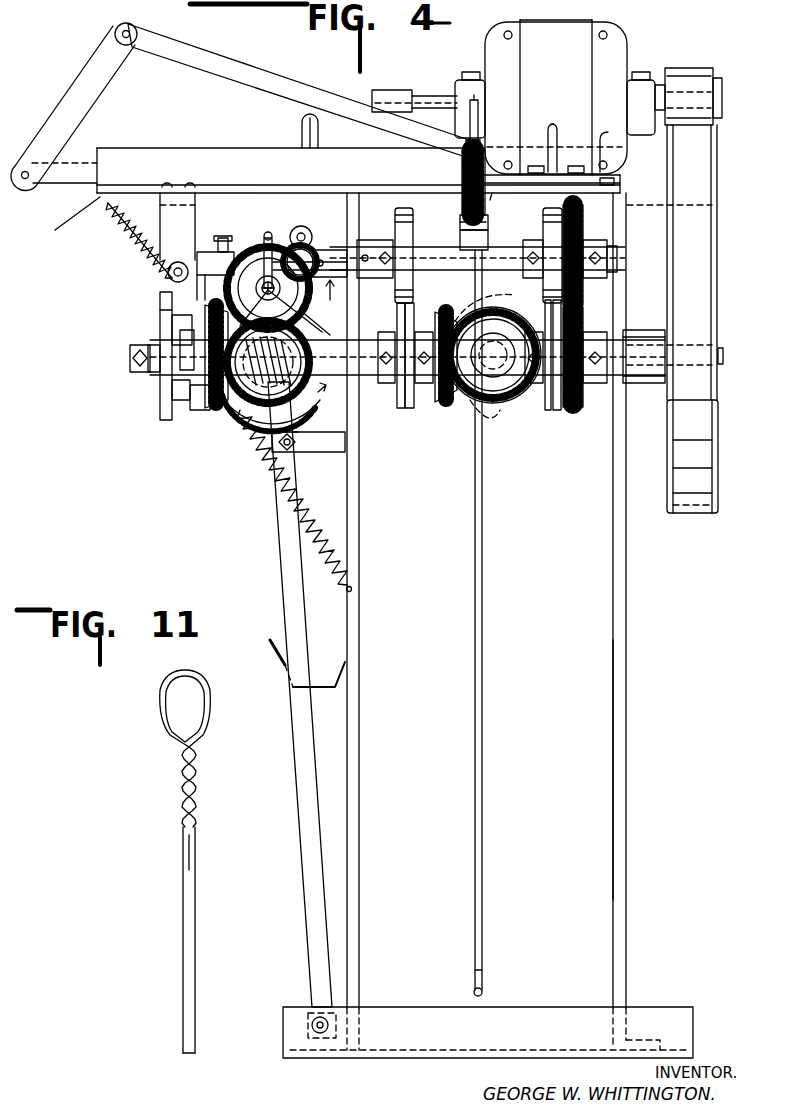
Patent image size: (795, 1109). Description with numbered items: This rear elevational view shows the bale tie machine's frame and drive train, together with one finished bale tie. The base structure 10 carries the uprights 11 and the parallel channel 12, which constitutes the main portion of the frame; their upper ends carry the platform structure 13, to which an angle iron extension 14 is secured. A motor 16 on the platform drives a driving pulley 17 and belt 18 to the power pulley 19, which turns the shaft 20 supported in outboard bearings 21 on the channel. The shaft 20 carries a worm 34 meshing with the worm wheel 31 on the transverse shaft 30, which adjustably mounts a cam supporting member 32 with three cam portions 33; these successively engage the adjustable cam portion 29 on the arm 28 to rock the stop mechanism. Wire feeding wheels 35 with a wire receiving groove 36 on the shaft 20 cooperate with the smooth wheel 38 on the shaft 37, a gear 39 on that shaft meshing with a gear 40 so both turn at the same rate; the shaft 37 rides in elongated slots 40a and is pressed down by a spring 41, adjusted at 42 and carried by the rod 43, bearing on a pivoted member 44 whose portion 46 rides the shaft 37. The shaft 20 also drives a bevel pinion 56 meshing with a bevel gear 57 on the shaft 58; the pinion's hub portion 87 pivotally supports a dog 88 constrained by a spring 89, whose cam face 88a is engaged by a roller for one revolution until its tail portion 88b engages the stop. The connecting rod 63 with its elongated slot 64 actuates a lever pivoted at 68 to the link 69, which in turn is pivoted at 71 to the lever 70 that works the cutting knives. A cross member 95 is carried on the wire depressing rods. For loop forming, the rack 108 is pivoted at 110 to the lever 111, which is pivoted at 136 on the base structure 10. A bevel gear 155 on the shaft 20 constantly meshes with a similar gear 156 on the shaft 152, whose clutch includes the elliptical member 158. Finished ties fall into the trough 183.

The base structure 10 is at (522, 1030).
The uprights 11 is at (355, 752).
The parallel channel 12 is at (585, 795).
The platform structure 13 is at (269, 218).
The angle iron extension 14 is at (205, 168).
The motor 16 is at (570, 70).
The driving pulley 17 is at (716, 84).
The belt 18 is at (708, 192).
The power pulley 19 is at (716, 448).
The shaft 20 is at (723, 358).
The outboard bearings 21 is at (362, 383).
The arm 28 is at (318, 250).
The adjustable cam portion 29 is at (311, 240).
The shaft 30 is at (272, 250).
The worm wheel 31 is at (250, 256).
The cam supporting member 32 is at (302, 244).
The cam portions 33 is at (266, 245).
The worm 34 is at (240, 425).
The wire feeding and guiding wheels 35 is at (399, 410).
The wire receiving groove 36 is at (410, 410).
The shaft 37 is at (445, 258).
The wheel 38 is at (402, 208).
The gear 39 is at (583, 220).
The gear 40 is at (576, 410).
The elongated slots 40a is at (365, 240).
The spring 41 is at (462, 188).
The tension adjustment 42 is at (470, 150).
The rod 43 is at (482, 645).
The member 44 is at (462, 230).
The portion 46 is at (488, 242).
The bevel pinion 56 is at (212, 410).
The bevel gear 57 is at (260, 418).
The shaft 58 is at (252, 389).
The connecting rod 63 is at (302, 134).
The elongated slot 64 is at (318, 136).
The pivot 68 is at (25, 186).
The link 69 is at (80, 106).
The lever 70 is at (223, 64).
The pivot 71 is at (128, 47).
The hub portion 87 is at (190, 392).
The dog 88 is at (160, 305).
The cam face 88a is at (160, 365).
The tail portion 88b is at (160, 292).
The spring 89 is at (172, 322).
The cross member 95 is at (394, 90).
The rack 108 is at (320, 452).
The pivot 110 is at (292, 434).
The lever 111 is at (292, 582).
The pivot 136 is at (313, 1020).
The shaft 152 is at (470, 420).
The bevel gear 155 is at (442, 408).
The bevel gear 156 is at (500, 420).
The elliptical member 158 is at (495, 400).
The trough 183 is at (343, 665).